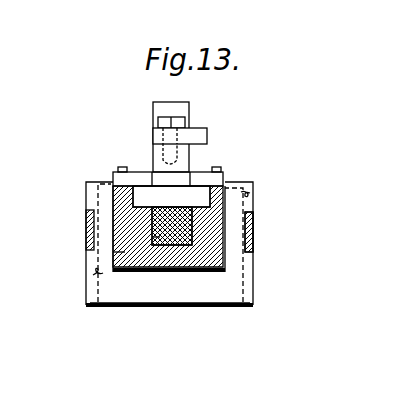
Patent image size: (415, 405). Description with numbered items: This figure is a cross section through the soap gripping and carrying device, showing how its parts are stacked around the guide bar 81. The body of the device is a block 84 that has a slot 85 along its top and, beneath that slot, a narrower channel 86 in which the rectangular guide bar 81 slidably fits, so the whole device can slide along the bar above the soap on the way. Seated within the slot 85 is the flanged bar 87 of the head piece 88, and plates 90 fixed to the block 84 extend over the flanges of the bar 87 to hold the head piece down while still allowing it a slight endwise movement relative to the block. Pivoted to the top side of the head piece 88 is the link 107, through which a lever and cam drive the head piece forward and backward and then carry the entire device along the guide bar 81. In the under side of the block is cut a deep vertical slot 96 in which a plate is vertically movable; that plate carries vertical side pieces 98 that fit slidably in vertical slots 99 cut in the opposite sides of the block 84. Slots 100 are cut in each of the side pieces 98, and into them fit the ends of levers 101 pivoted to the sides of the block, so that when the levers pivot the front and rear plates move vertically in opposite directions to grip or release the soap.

The guide bar 81 is at (120, 249).
The block 84 is at (188, 268).
The slot 85 is at (113, 200).
The channel 86 is at (152, 225).
The flanged bar 87 is at (171, 196).
The head piece 88 is at (190, 111).
The plates 90 is at (141, 158).
The vertical slot 96 is at (223, 298).
The side pieces 98 is at (86, 286).
The vertical slots 99 is at (93, 275).
The slots 100 is at (86, 211).
The levers 101 is at (152, 237).
The link 107 is at (207, 135).